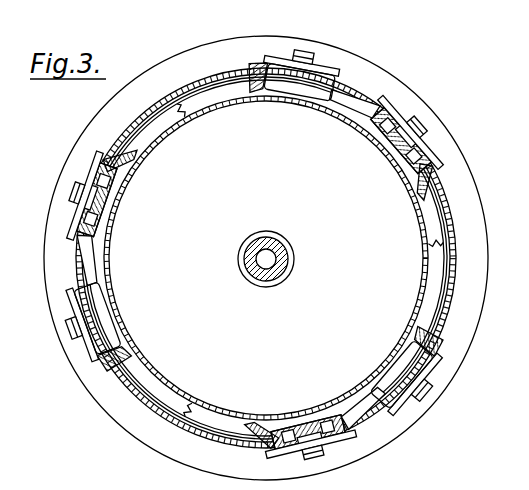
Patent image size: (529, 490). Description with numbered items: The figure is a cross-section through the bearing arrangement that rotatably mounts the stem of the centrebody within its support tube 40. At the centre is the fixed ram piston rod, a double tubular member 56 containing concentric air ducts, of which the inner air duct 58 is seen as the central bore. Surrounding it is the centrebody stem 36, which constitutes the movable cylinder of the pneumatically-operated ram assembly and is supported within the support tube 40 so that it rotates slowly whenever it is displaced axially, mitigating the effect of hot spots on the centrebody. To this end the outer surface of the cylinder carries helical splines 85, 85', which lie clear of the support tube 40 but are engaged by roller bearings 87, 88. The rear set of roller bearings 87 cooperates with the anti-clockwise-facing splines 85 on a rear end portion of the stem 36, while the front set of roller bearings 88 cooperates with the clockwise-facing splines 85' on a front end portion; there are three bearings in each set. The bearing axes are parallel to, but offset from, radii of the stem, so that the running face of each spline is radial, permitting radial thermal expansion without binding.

The support tube 40 is at (203, 78).
The centrebody stem 36 is at (178, 120).
The double tubular member 56 is at (240, 271).
The inner air duct 58 is at (268, 262).
The helical splines 85 is at (254, 263).
The helical splines 85' is at (186, 216).
The roller bearings 87 is at (300, 430).
The roller bearings 88 is at (312, 83).